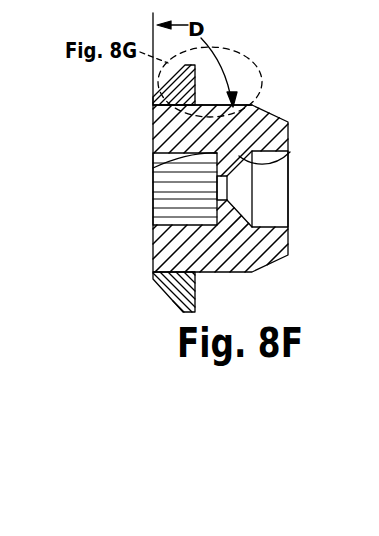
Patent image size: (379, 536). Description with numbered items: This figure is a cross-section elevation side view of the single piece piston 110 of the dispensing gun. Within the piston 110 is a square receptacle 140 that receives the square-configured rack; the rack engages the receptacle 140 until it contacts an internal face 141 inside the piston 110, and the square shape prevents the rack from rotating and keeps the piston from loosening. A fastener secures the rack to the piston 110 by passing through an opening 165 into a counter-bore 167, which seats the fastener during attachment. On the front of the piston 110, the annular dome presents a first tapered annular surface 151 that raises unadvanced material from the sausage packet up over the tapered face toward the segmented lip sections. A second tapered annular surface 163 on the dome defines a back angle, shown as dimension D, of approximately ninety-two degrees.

The piston 110 is at (200, 192).
The square receptacle 140 is at (151, 177).
The internal face 141 is at (153, 168).
The first tapered annular surface 151 is at (260, 271).
The second tapered annular surface 163 is at (242, 106).
The opening 165 is at (267, 199).
The counter-bore 167 is at (290, 152).